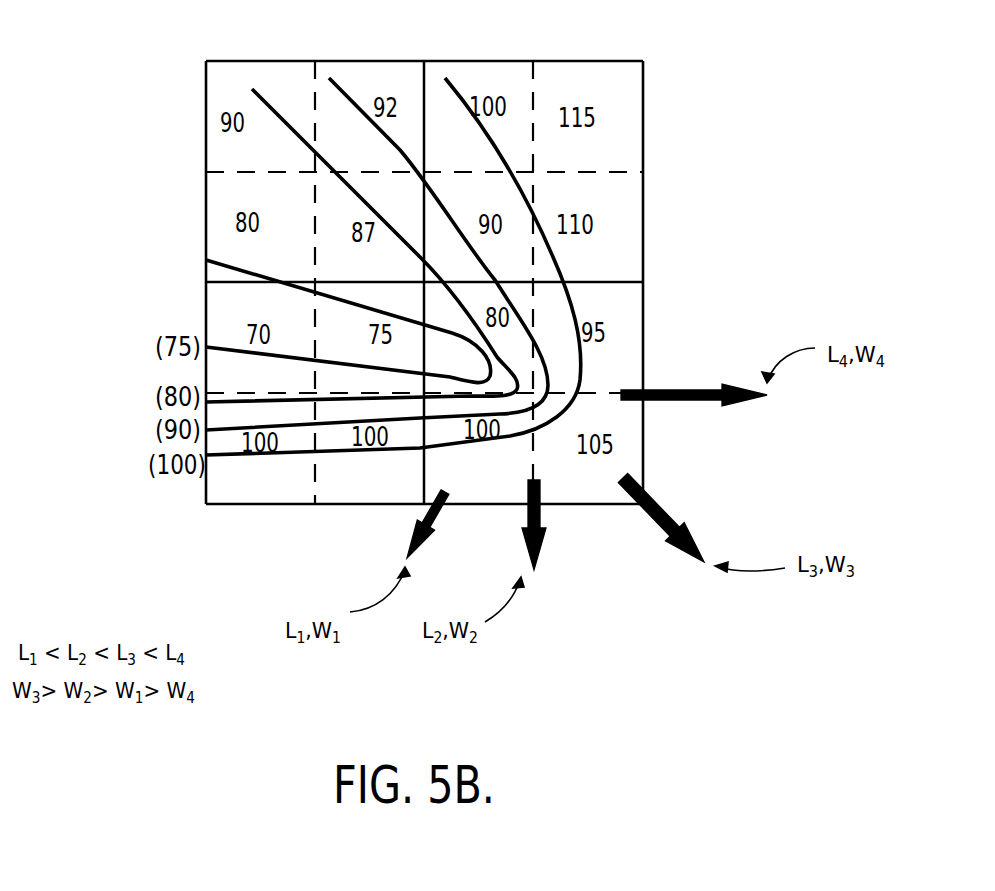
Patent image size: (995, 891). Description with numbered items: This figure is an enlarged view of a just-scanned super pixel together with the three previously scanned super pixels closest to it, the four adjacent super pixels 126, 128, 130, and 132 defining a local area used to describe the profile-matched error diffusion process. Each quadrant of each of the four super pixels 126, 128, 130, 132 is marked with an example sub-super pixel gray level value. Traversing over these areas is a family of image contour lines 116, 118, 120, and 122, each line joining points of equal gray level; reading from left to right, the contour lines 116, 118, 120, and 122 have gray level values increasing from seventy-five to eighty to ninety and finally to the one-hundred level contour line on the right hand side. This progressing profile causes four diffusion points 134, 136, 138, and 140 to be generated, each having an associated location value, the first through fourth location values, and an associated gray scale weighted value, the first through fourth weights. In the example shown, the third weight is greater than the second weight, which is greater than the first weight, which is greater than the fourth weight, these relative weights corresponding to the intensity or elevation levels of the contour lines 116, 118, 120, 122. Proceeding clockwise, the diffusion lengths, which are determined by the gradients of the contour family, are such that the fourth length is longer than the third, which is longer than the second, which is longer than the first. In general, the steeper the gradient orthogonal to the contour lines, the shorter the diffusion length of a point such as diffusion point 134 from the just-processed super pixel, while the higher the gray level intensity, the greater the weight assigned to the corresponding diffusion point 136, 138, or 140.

The contour line 116 is at (207, 258).
The contour line 118 is at (256, 86).
The contour line 120 is at (342, 76).
The contour line 122 is at (456, 76).
The super pixel 126 is at (643, 472).
The super pixel 128 is at (206, 504).
The super pixel 130 is at (206, 107).
The super pixel 132 is at (600, 61).
The diffusion point 134 is at (416, 541).
The diffusion point 136 is at (536, 568).
The diffusion point 138 is at (705, 561).
The diffusion point 140 is at (766, 391).